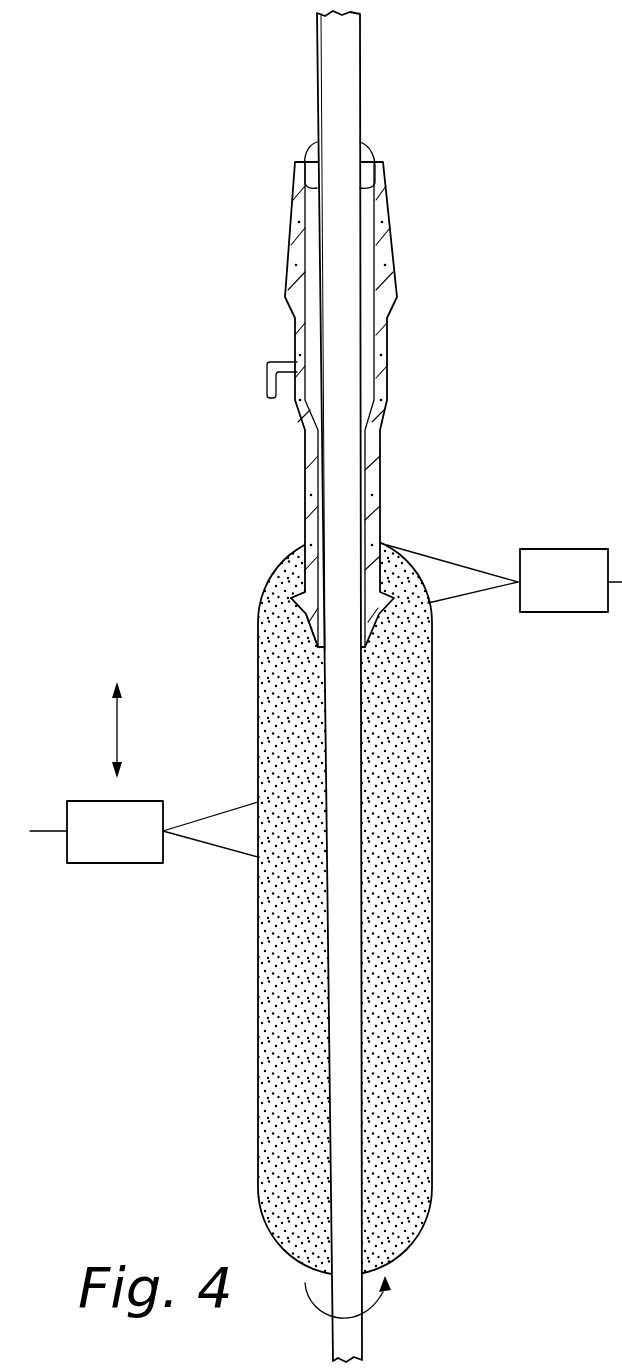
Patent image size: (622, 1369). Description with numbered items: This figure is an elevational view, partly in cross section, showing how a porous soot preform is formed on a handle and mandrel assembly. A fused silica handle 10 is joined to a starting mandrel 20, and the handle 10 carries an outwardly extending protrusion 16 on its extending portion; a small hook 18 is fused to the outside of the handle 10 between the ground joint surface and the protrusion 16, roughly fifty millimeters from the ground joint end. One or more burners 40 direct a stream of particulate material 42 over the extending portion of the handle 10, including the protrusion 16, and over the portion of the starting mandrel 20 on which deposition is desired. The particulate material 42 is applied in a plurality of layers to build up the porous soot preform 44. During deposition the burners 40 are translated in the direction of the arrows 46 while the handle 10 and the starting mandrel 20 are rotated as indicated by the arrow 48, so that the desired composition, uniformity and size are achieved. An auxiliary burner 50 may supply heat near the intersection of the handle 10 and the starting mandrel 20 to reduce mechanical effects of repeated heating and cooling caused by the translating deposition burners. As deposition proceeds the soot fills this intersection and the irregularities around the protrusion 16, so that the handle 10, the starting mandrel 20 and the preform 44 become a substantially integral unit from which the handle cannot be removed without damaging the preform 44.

The handle 10 is at (396, 344).
The outwardly extending protrusion 16 is at (290, 600).
The small hook 18 is at (266, 383).
The starting mandrel 20 is at (362, 1342).
The burners 40 is at (110, 863).
The particulate material 42 is at (226, 830).
The porous soot preform 44 is at (273, 940).
The arrows 46 is at (117, 730).
The arrow 48 is at (388, 1302).
The auxiliary burner 50 is at (563, 612).